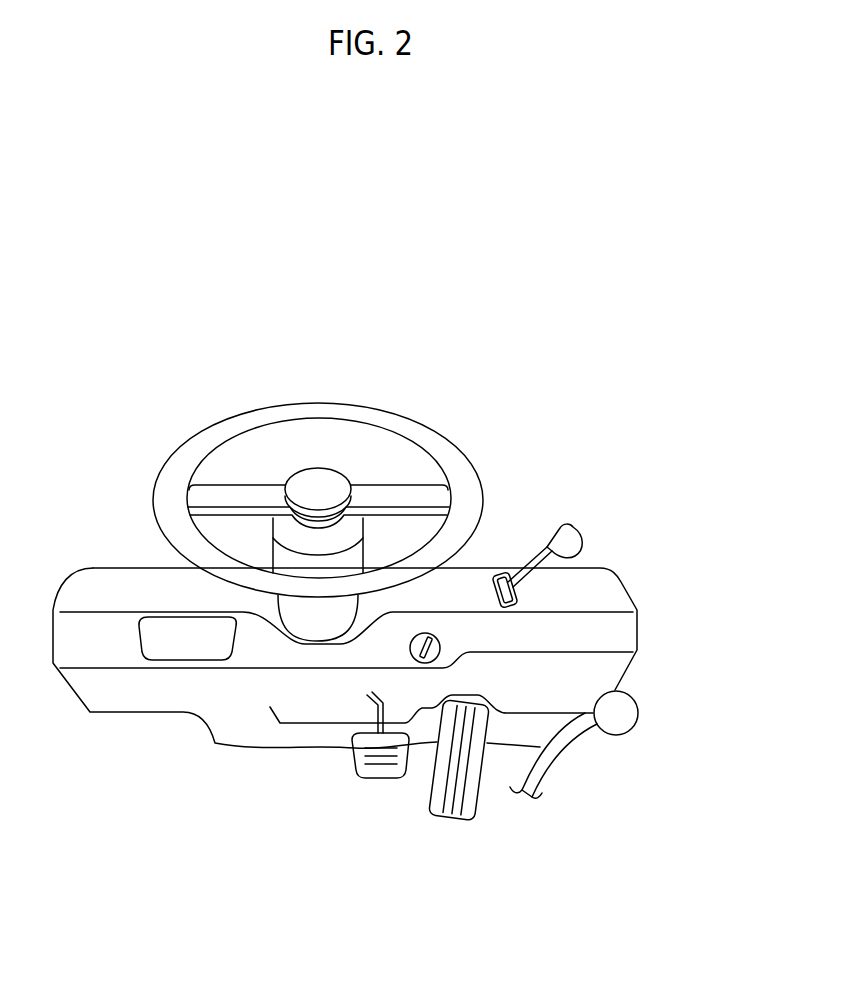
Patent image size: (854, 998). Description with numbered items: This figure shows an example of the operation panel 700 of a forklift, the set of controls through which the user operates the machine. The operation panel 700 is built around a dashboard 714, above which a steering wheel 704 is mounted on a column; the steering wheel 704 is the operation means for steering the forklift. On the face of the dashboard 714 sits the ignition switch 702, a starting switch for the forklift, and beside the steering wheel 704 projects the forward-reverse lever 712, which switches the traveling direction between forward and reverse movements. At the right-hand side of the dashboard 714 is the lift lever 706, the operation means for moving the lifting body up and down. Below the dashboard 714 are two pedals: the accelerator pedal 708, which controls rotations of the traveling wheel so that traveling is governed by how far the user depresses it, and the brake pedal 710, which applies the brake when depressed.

The operation panel 700 is at (366, 941).
The ignition switch 702 is at (440, 643).
The steering wheel 704 is at (427, 440).
The lift lever 706 is at (628, 713).
The accelerator pedal 708 is at (470, 797).
The brake pedal 710 is at (378, 768).
The forward-reverse lever 712 is at (570, 542).
The dashboard 714 is at (623, 628).